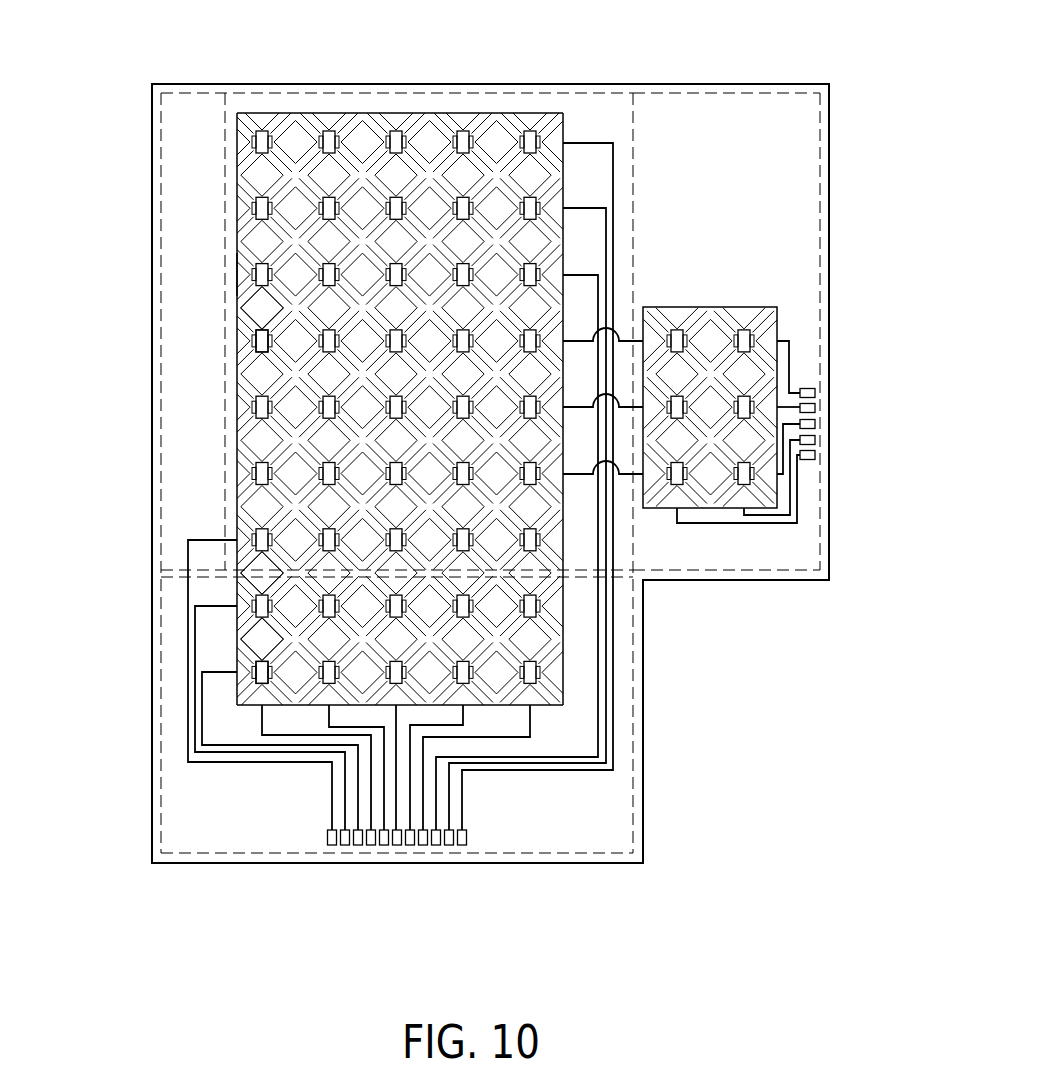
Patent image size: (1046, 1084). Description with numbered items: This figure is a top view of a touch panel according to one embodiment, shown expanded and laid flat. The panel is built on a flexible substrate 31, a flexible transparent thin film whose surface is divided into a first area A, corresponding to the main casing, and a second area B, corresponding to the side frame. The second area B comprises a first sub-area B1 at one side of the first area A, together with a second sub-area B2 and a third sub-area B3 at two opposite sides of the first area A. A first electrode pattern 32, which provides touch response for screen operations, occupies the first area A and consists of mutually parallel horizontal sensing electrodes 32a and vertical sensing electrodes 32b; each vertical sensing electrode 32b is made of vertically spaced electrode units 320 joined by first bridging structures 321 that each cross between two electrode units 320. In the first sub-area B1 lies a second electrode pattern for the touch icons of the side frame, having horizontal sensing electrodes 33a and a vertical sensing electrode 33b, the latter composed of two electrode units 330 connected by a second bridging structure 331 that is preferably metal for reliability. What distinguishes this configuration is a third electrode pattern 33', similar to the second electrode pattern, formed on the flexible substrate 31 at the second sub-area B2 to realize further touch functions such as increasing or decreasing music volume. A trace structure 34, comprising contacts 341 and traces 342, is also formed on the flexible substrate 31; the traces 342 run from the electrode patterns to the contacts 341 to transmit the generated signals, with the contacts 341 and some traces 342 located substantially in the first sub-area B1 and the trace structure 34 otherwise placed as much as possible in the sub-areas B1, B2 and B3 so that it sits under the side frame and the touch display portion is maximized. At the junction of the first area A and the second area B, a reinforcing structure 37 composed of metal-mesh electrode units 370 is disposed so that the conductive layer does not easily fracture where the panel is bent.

The flexible substrate 31 is at (829, 135).
The first electrode pattern 32 is at (207, 181).
The horizontal sensing electrodes 32a is at (237, 276).
The vertical sensing electrodes 32b is at (166, 327).
The electrode units 320 is at (252, 309).
The first bridging structures 321 is at (262, 343).
The electrode units 370 is at (257, 573).
The reinforcing structure 37 is at (160, 572).
The horizontal sensing electrodes 33a is at (237, 617).
The vertical sensing electrode 33b is at (168, 659).
The electrode units 330 is at (258, 650).
The second bridging structure 331 is at (262, 683).
The third electrode pattern 33' is at (710, 354).
The trace structure 34 is at (617, 762).
The traces 342 is at (757, 528).
The contacts 341 is at (463, 845).
The first area A is at (462, 97).
The second area B is at (195, 817).
The first sub-area B1 is at (538, 853).
The second sub-area B2 is at (726, 93).
The third sub-area B3 is at (160, 208).